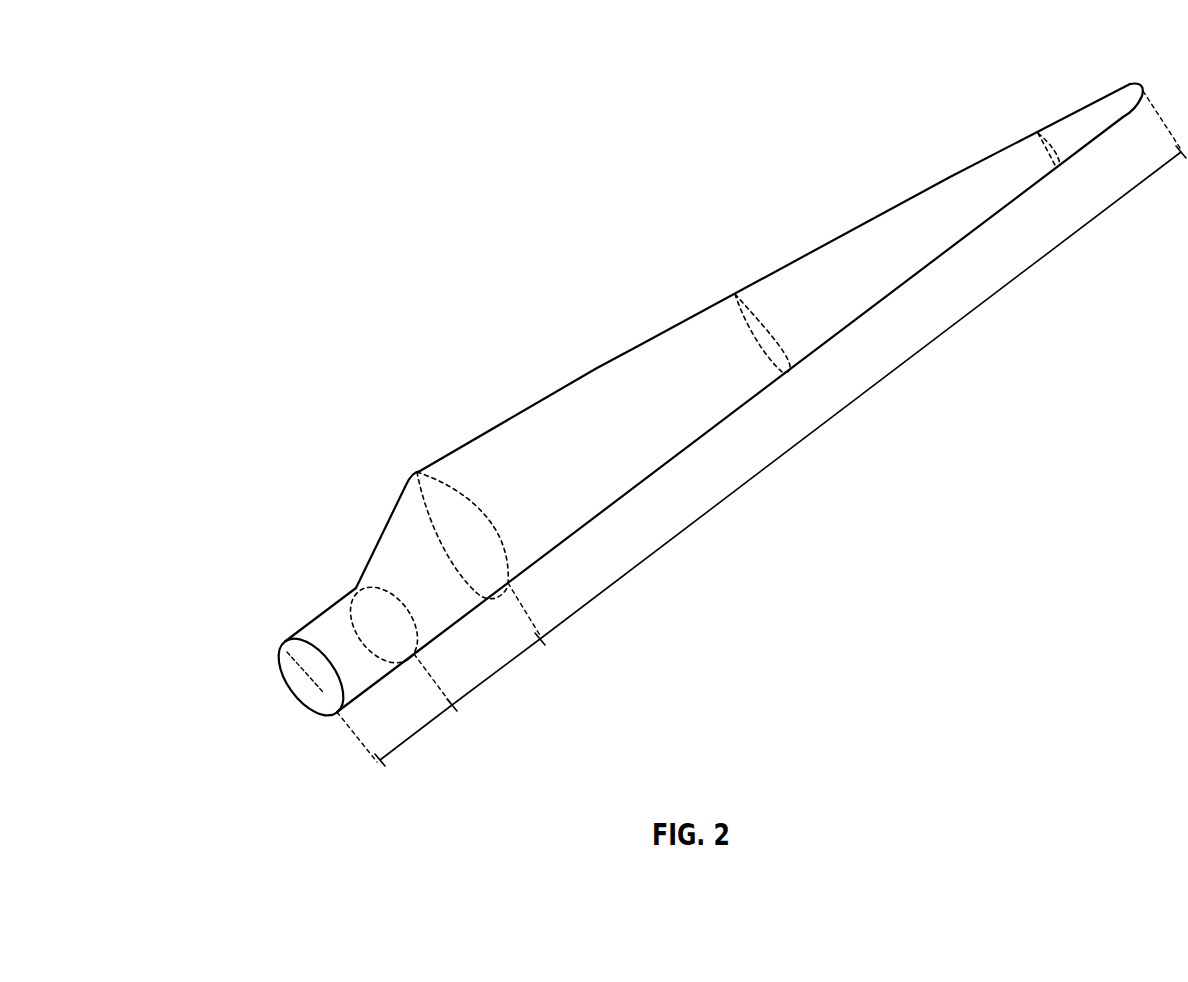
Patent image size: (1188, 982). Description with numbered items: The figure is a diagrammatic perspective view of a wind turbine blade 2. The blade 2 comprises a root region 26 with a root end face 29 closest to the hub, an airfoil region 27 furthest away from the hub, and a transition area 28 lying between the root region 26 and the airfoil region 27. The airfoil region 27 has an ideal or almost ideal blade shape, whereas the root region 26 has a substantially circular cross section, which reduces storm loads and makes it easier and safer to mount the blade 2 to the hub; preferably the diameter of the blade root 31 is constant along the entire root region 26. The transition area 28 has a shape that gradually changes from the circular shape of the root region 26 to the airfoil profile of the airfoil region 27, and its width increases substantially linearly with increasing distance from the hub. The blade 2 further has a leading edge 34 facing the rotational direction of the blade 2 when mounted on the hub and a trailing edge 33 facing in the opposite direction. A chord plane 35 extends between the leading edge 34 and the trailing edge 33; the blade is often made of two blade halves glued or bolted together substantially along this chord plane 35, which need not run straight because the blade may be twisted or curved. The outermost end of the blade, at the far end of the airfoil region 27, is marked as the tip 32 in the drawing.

The blade 2 is at (570, 309).
The root region 26 is at (413, 735).
The airfoil region 27 is at (867, 390).
The transition area 28 is at (505, 668).
The root end face 29 is at (333, 713).
The blade root 31 is at (337, 643).
The blade tip 32 is at (1113, 103).
The trailing edge 33 is at (662, 332).
The leading edge 34 is at (717, 428).
The chord plane 35 is at (300, 670).